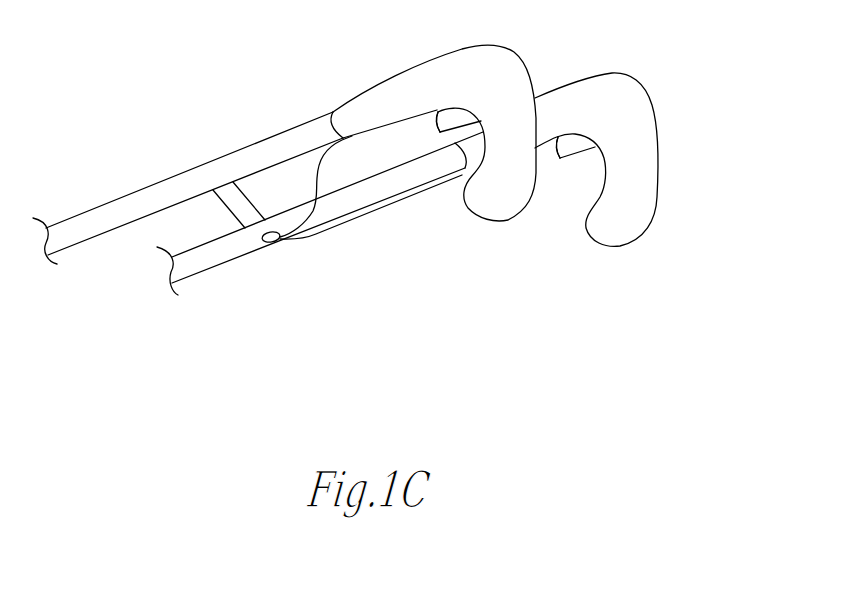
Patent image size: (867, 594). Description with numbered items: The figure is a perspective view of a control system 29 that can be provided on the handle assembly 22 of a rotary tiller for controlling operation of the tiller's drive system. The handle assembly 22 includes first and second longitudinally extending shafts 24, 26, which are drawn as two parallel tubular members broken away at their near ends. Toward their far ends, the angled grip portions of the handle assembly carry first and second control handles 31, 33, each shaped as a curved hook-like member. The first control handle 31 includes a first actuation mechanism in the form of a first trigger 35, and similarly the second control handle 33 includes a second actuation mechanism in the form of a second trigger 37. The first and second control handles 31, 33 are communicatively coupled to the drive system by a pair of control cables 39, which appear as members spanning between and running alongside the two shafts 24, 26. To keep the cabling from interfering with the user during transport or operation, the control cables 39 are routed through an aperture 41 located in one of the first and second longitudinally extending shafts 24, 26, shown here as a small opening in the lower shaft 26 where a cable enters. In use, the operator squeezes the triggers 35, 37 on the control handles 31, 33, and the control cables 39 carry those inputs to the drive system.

The handle assembly 22 is at (85, 151).
The first longitudinally extending shaft 24 is at (82, 213).
The second longitudinally extending shaft 26 is at (190, 276).
The control system 29 is at (691, 52).
The first control handle 31 is at (527, 65).
The second control handle 33 is at (658, 137).
The first trigger 35 is at (451, 120).
The second trigger 37 is at (572, 162).
The control cables 39 is at (316, 178).
The aperture 41 is at (266, 243).